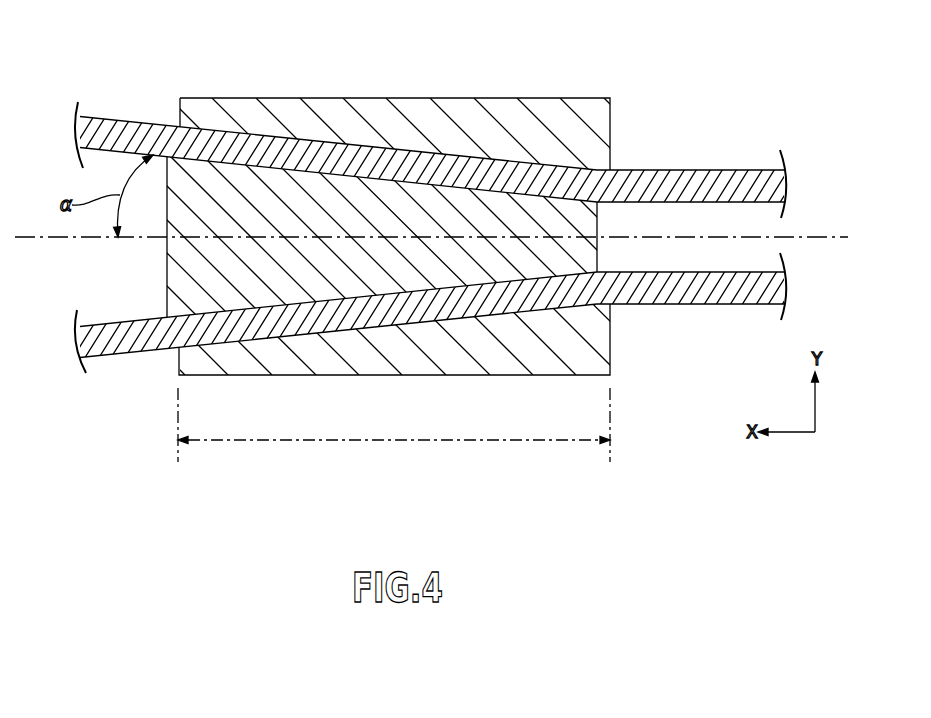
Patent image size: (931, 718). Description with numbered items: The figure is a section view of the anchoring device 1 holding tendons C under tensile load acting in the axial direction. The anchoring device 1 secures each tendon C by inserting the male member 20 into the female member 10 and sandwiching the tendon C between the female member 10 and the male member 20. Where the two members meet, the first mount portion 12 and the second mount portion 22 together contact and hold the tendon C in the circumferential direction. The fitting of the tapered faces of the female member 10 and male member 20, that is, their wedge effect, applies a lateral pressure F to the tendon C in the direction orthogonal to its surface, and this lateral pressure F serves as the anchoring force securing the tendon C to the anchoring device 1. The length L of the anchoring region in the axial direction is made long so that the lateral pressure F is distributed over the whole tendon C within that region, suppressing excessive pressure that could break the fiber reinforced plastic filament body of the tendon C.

The anchoring device 1 is at (438, 77).
The female member 10 is at (332, 97).
The first mount portion 12 is at (274, 141).
The male member 20 is at (167, 272).
The second mount portion 22 is at (220, 133).
The lateral pressure F is at (466, 156).
The tendon C is at (110, 130).
The length L is at (378, 440).